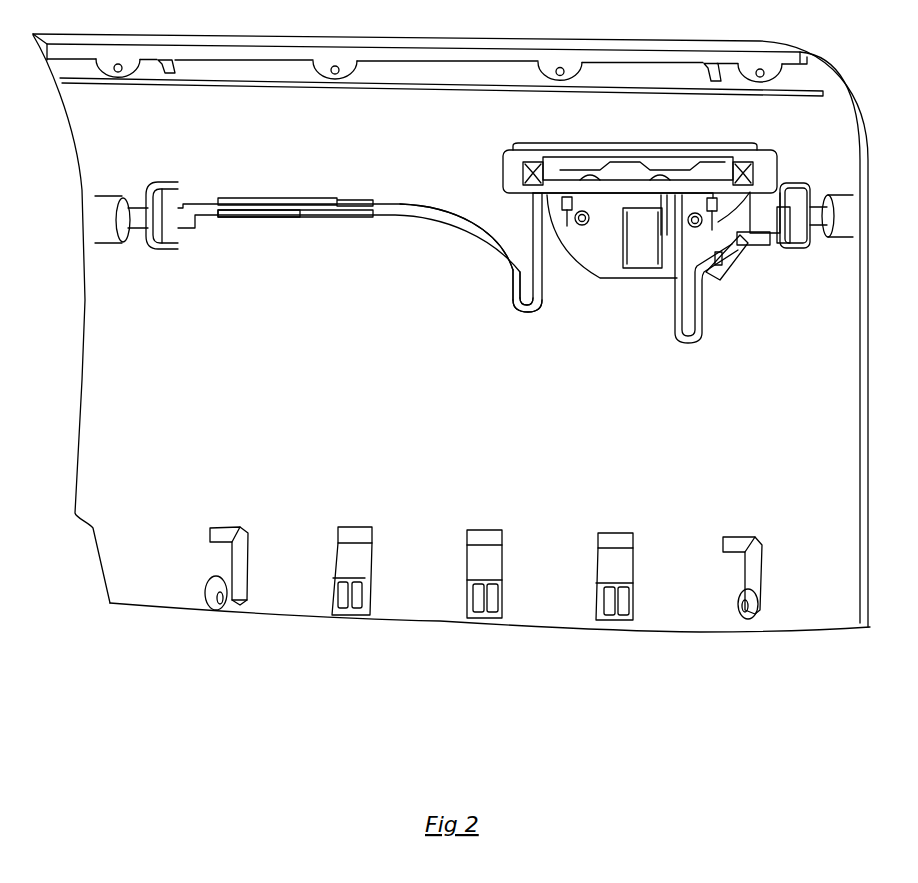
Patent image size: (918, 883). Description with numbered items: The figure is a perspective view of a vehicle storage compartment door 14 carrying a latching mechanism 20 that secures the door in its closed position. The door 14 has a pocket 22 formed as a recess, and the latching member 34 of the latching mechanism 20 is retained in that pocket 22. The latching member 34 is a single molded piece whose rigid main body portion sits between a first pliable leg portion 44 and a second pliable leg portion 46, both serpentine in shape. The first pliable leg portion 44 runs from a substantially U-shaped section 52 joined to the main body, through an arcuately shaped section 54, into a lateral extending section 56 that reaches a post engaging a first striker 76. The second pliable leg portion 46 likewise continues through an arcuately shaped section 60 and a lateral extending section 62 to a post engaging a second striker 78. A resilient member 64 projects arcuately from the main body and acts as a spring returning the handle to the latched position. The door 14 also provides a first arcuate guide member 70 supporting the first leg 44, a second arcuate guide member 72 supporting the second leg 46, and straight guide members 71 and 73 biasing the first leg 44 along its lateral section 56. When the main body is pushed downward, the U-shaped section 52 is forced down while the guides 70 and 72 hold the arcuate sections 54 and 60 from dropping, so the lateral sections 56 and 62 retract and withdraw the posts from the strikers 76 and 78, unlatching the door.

The storage compartment door 14 is at (451, 333).
The latching mechanism 20 is at (749, 136).
The pocket 22 is at (597, 258).
The latching member 34 is at (560, 187).
The first pliable leg portion 44 is at (417, 209).
The second pliable leg portion 46 is at (740, 248).
The substantially U-shaped section 52 is at (533, 310).
The arcuately shaped section 54 is at (472, 218).
The lateral extending section 56 is at (247, 217).
The arcuately shaped section 60 is at (743, 254).
The lateral extending section 62 is at (790, 250).
The resilient member 64 is at (637, 243).
The first arcuate guide member 70 is at (513, 290).
The straight guide member 71 is at (328, 217).
The second arcuate guide member 72 is at (737, 253).
The straight guide member 73 is at (285, 198).
The first striker 76 is at (105, 194).
The second striker 78 is at (813, 210).